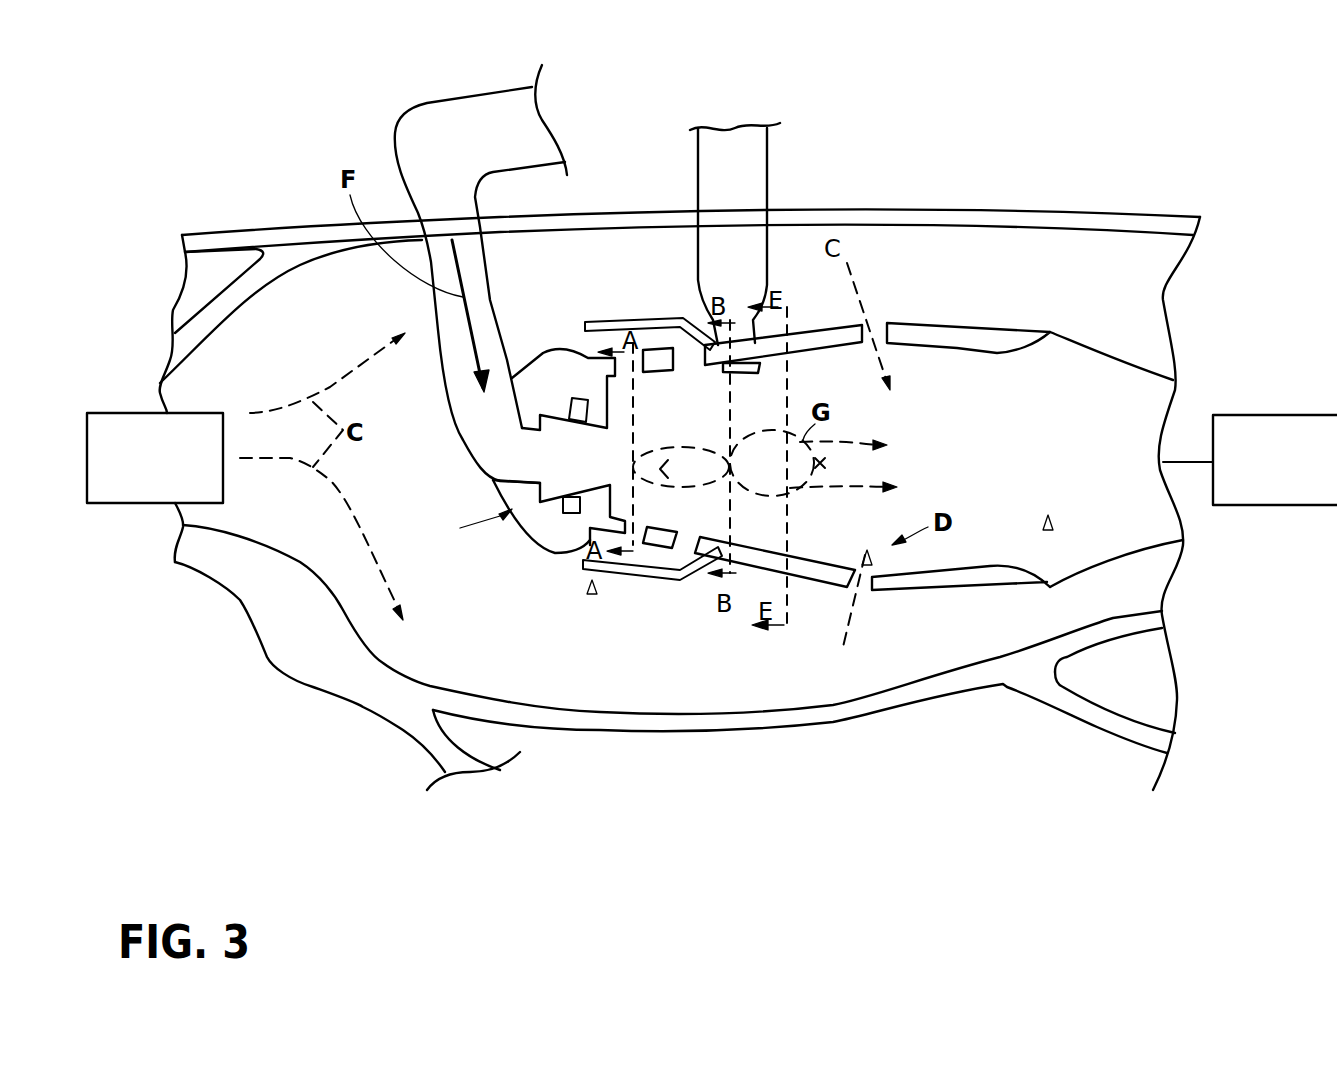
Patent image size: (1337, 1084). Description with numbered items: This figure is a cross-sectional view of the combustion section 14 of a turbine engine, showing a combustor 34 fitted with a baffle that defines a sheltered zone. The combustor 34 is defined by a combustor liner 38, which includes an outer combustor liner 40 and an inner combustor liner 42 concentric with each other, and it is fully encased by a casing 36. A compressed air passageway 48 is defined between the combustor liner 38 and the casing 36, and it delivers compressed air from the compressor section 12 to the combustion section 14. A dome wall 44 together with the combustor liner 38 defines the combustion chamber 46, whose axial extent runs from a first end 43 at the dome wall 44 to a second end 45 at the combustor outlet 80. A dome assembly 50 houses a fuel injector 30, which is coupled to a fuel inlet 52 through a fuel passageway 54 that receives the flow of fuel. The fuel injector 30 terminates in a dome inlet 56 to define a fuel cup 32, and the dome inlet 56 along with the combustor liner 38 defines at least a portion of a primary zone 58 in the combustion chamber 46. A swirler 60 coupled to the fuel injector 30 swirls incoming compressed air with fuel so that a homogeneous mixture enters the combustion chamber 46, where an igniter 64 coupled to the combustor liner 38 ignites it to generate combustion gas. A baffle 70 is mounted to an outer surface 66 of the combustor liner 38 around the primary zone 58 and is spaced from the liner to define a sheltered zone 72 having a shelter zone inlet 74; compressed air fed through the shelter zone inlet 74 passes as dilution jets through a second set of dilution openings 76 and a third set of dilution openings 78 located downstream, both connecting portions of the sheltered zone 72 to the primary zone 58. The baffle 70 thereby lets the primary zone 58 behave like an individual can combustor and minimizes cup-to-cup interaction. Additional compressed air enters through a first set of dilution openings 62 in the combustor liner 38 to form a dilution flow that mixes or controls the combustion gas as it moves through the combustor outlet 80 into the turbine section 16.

The compressor section 12 is at (172, 471).
The combustion section 14 is at (280, 103).
The turbine section 16 is at (1294, 475).
The fuel injector 30 is at (538, 528).
The fuel cup 32 is at (580, 466).
The combustor 34 is at (912, 300).
The casing 36 is at (1102, 223).
The combustor liner 38 is at (972, 323).
The outer combustor liner 40 is at (995, 347).
The inner combustor liner 42 is at (930, 580).
The first end 43 is at (592, 594).
The dome wall 44 is at (595, 395).
The second end 45 is at (1046, 530).
The combustion chamber 46 is at (946, 469).
The compressed air passageway 48 is at (739, 669).
The dome assembly 50 is at (472, 527).
The fuel inlet 52 is at (467, 126).
The fuel passageway 54 is at (483, 320).
The dome inlet 56 is at (630, 443).
The primary zone 58 is at (667, 509).
The swirler 60 is at (575, 518).
The first set of dilution openings 62 is at (865, 588).
The igniter 64 is at (730, 270).
The outer surface 66 is at (827, 582).
The baffle 70 is at (606, 327).
The sheltered zone 72 is at (600, 338).
The shelter zone inlet 74 is at (598, 350).
The second set of dilution openings 76 is at (640, 530).
The third set of dilution openings 78 is at (688, 352).
The combustor outlet 80 is at (1102, 463).